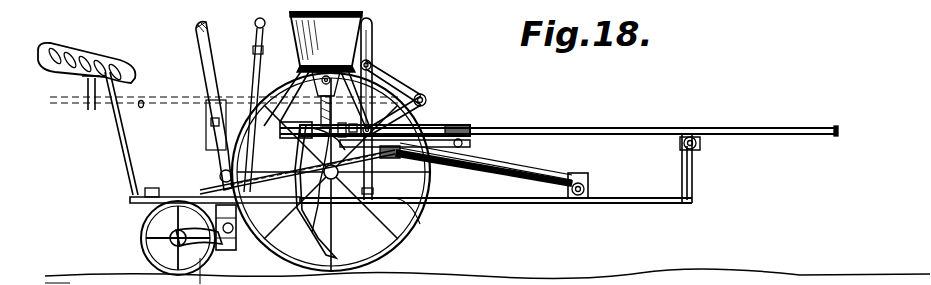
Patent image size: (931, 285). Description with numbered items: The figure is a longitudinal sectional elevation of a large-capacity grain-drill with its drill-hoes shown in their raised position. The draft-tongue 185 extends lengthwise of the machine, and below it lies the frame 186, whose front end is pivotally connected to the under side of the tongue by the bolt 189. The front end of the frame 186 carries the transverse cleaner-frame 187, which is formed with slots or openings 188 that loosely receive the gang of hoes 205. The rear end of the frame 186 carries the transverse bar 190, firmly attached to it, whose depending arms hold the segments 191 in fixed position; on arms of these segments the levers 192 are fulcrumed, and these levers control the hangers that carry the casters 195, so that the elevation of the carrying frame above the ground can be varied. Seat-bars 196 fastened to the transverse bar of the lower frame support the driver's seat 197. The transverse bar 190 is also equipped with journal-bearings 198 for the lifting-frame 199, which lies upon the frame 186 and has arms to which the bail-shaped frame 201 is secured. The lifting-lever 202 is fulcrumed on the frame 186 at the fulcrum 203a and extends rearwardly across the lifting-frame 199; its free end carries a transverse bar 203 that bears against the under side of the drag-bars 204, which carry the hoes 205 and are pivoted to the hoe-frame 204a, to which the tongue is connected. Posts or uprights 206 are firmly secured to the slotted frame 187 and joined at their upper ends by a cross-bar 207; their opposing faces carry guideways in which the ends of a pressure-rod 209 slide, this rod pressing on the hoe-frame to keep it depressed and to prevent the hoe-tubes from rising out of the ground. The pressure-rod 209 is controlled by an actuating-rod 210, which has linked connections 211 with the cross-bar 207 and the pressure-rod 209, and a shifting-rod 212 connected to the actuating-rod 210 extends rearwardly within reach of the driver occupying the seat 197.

The draft-tongue 185 is at (620, 128).
The frame 186 is at (521, 205).
The transverse cleaner-frame 187 is at (421, 224).
The slots or openings 188 is at (358, 206).
The bolt 189 is at (696, 146).
The transverse bar 190 is at (186, 232).
The segments 191 is at (240, 212).
The levers 192 is at (251, 35).
The casters 195 is at (140, 246).
The seat-bars 196 is at (127, 150).
The driver's seat 197 is at (82, 37).
The journal-bearings 198 is at (220, 173).
The lifting-frame 199 is at (282, 173).
The bail-shaped frame 201 is at (200, 48).
The lifting-lever 202 is at (540, 171).
The transverse bar 203 is at (421, 160).
The fulcrum of lifting-lever 203a is at (590, 189).
The drag-bars 204 is at (446, 127).
The hoe-frame 204a is at (464, 145).
The hoes 205 is at (313, 212).
The posts or uprights 206 is at (375, 41).
The cross-bar 207 is at (372, 67).
The pressure-rod 209 is at (362, 127).
The actuating-rod 210 is at (426, 97).
The linked connections 211 is at (421, 116).
The shifting-rod 212 is at (168, 102).